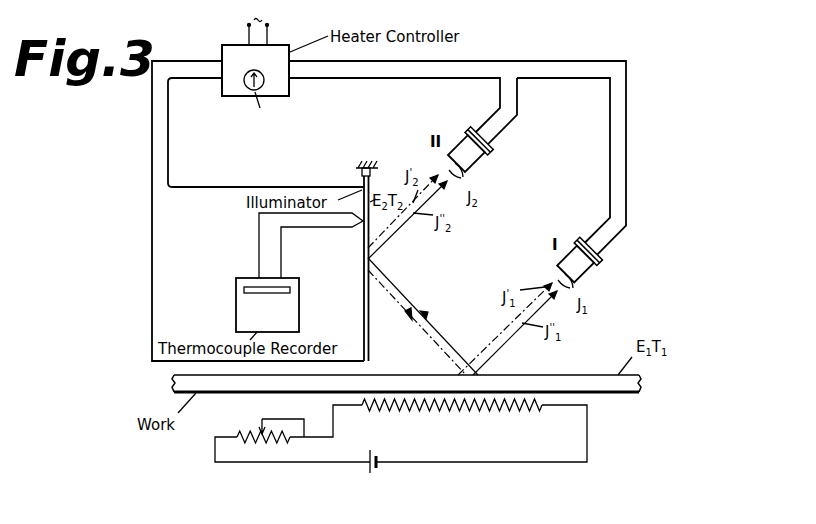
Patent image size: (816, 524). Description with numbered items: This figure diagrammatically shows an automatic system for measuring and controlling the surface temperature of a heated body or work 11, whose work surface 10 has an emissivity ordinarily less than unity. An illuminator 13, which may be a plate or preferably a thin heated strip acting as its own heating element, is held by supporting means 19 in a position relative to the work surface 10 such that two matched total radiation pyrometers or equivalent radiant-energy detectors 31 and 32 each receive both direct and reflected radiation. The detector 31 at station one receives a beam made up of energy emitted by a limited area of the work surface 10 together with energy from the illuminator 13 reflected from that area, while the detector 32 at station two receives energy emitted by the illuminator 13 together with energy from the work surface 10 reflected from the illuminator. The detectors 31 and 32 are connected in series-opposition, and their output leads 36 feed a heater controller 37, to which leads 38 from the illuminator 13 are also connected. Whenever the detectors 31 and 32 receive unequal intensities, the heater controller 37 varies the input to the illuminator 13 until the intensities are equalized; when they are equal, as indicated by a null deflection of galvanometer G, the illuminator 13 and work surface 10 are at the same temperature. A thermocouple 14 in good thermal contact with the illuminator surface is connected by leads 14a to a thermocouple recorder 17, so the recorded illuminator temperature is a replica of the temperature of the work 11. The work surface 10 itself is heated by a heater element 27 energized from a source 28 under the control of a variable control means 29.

The work surface 10 is at (556, 376).
The work 11 is at (618, 393).
The illuminator 13 is at (364, 300).
The thermocouple 14 is at (322, 228).
The leads 14a is at (314, 214).
The thermocouple recorder 17 is at (278, 321).
The supporting means 19 is at (360, 172).
The heater element 27 is at (507, 410).
The source 28 is at (376, 472).
The variable control means 29 is at (259, 426).
The radiant-energy detector 31 is at (601, 255).
The radiant-energy detector 32 is at (492, 143).
The output leads 36 is at (441, 78).
The heater controller 37 is at (222, 47).
The leads 38 is at (152, 133).